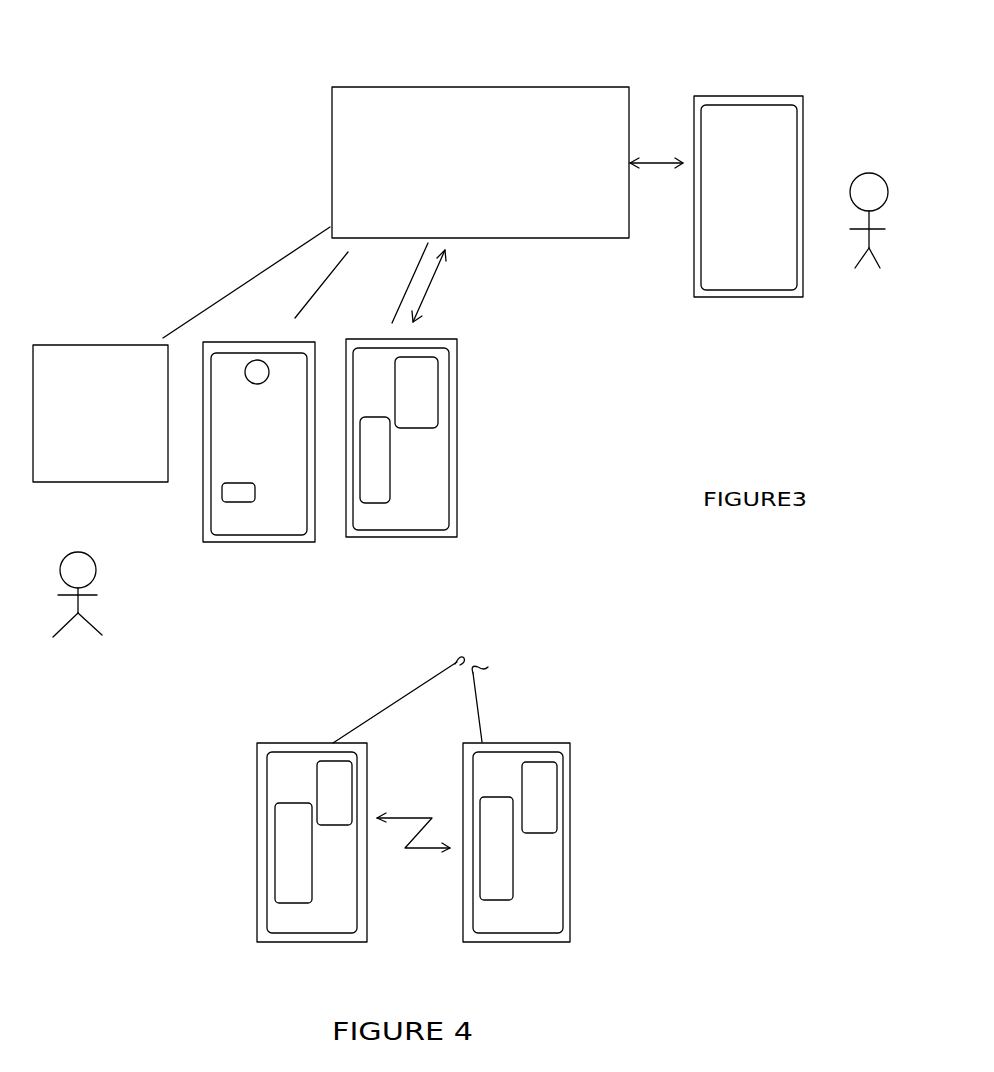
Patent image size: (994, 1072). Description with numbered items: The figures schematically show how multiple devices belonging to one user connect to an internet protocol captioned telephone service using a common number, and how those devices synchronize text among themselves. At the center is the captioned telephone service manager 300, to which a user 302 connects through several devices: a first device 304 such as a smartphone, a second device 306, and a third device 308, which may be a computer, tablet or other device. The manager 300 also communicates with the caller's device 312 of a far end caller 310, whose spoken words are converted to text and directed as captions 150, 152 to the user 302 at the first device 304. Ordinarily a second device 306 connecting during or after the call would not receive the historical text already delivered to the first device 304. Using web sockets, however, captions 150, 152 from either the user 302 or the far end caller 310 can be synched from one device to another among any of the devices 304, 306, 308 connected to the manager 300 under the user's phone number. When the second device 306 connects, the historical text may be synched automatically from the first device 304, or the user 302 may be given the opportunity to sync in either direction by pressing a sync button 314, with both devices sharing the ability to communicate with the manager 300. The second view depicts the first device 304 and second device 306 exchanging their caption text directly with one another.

In FIG. 3, the captioned telephone service manager 300 is at (505, 86).
In FIG. 3, the caller's device 312 is at (763, 122).
In FIG. 3, the far end caller 310 is at (892, 162).
In FIG. 3, the third device 308 is at (126, 483).
In FIG. 3, the user 302 is at (82, 607).
In FIG. 3, the second device 306 is at (259, 447).
In FIG. 4, the second device 306 is at (297, 943).
In FIG. 3, the sync button 314 is at (255, 362).
In FIG. 3, the first device 304 is at (435, 438).
In FIG. 4, the first device 304 is at (528, 943).
In FIG. 3, the captions 150 is at (425, 397).
In FIG. 3, the captions 152 is at (225, 500).